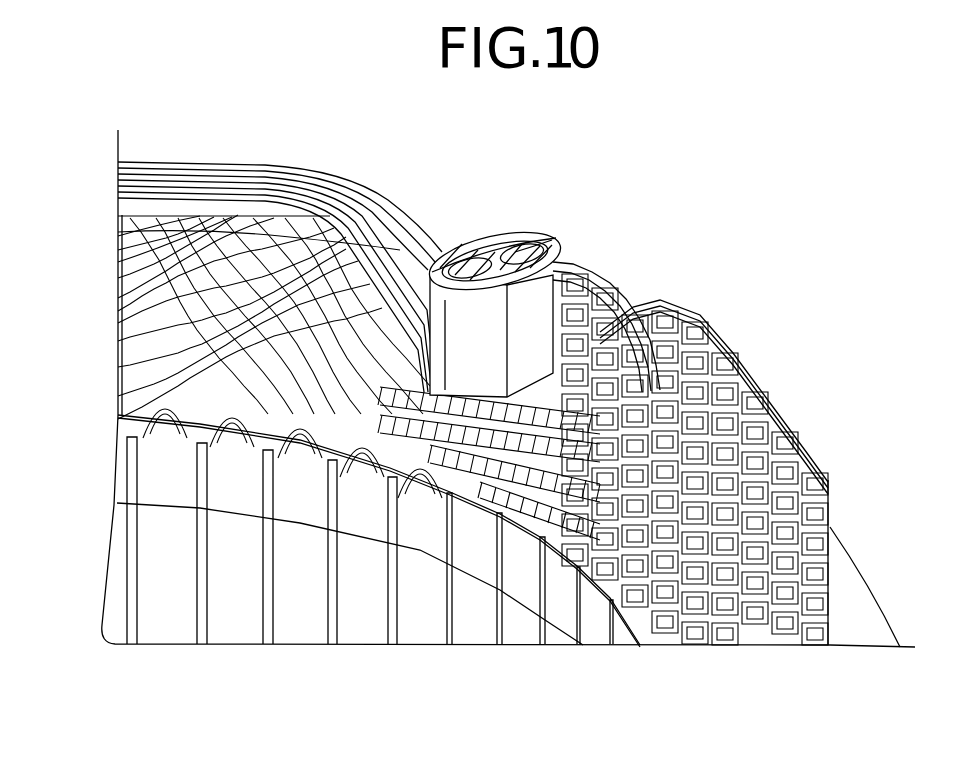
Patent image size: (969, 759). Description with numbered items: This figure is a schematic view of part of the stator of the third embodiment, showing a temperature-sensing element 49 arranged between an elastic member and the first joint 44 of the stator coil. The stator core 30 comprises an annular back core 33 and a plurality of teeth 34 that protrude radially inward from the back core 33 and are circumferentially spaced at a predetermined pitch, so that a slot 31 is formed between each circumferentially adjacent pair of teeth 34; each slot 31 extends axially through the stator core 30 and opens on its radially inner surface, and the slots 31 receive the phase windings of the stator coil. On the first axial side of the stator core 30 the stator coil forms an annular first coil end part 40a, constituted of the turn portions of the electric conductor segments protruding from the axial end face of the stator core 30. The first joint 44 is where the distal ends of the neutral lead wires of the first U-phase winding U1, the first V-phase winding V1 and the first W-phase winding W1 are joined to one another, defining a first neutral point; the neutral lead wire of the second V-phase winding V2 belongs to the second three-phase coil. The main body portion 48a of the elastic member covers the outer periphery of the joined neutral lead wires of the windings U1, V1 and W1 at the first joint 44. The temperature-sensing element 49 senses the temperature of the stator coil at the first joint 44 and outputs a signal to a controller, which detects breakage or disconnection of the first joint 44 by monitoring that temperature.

The second V-phase winding V2 is at (180, 163).
The first W-phase winding W1 is at (257, 197).
The first V-phase winding V1 is at (397, 207).
The first U-phase winding U1 is at (552, 232).
The temperature-sensing element 49 is at (480, 232).
The first joint 44 is at (595, 182).
The main body portion 48a is at (537, 290).
The first coil end part 40a is at (793, 338).
The stator core 30 is at (862, 554).
The slots 31 is at (273, 600).
The teeth 34 is at (417, 605).
The back core 33 is at (857, 627).